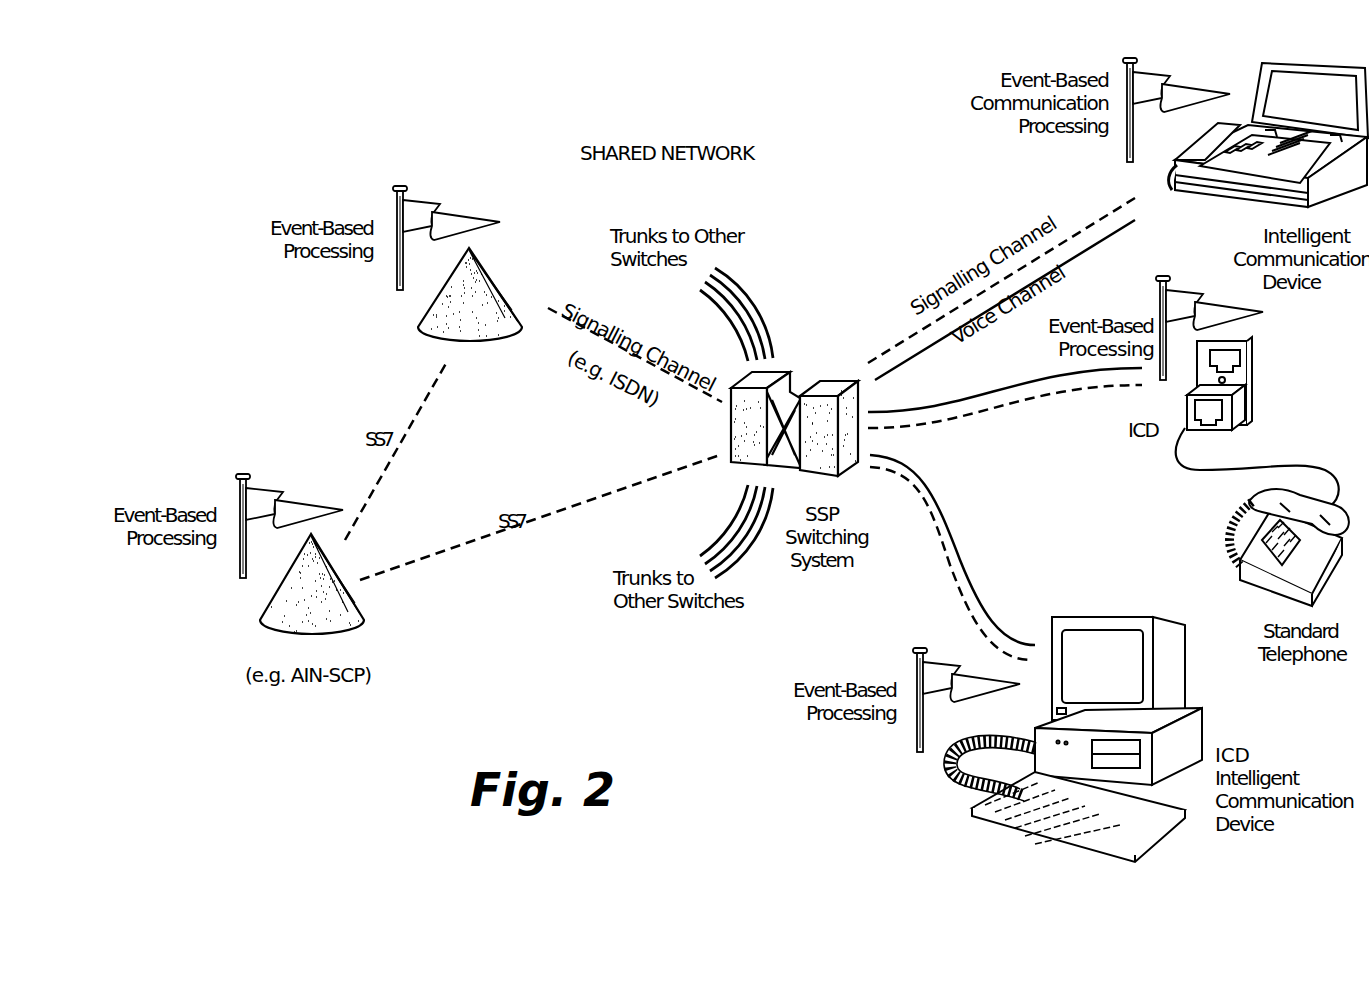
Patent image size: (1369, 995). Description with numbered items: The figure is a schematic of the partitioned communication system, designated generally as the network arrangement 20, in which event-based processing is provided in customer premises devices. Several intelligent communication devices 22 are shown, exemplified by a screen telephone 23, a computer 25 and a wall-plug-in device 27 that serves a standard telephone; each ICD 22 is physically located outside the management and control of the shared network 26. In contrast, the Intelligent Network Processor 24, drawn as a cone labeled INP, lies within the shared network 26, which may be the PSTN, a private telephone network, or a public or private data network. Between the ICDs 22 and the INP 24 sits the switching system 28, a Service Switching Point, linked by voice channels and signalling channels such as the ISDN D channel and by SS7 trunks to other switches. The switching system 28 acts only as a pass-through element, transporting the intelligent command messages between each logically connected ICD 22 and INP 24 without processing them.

The network arrangement 20 is at (812, 128).
The intelligent communication device 22 is at (1156, 450).
The screen telephone 23 is at (1282, 72).
The Intelligent Network Processor 24 is at (488, 288).
The computer 25 is at (1078, 612).
The shared network 26 is at (176, 411).
The wall-plug-in device 27 is at (1235, 437).
The switching system 28 is at (828, 385).